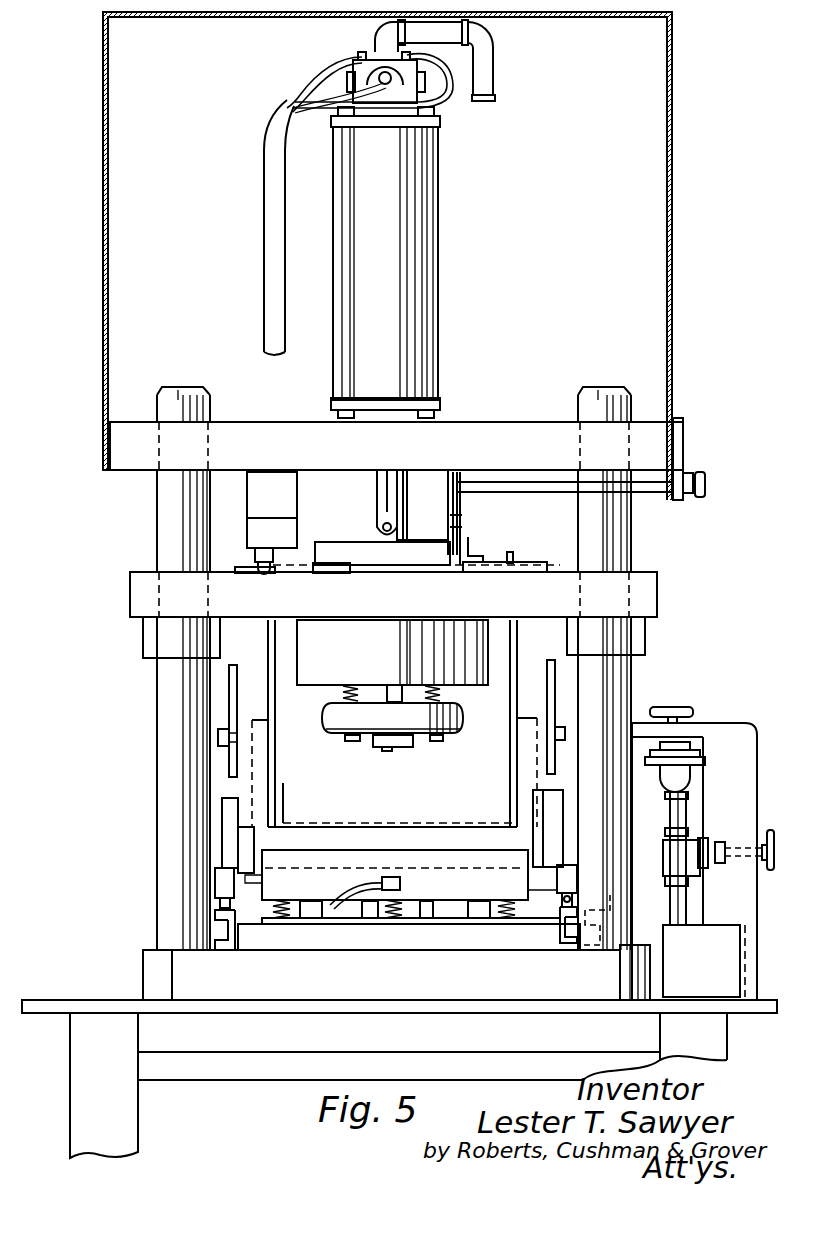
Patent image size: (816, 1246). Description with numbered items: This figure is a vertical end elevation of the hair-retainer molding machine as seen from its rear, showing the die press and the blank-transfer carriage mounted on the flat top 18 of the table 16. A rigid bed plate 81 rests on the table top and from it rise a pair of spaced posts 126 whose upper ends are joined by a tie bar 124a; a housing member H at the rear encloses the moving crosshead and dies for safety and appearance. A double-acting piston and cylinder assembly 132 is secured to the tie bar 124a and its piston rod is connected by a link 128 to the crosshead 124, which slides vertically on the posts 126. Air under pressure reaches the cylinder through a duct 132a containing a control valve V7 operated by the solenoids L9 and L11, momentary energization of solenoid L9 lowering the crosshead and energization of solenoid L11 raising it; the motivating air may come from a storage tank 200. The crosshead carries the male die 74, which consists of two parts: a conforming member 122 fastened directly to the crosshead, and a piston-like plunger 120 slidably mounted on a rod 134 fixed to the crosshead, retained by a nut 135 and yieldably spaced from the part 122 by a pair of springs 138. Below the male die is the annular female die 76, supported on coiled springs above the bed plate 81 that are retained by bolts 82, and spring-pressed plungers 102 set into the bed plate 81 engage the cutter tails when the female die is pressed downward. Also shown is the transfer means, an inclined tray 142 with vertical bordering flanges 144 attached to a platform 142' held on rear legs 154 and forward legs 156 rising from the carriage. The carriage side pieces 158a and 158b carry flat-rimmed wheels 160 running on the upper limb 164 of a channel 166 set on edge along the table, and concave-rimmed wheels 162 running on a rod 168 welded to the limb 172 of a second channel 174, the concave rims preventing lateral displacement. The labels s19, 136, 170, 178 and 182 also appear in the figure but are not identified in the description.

The housing member H is at (674, 184).
The tie bar 124a is at (407, 459).
The posts 126 is at (631, 664).
The crosshead 124 is at (648, 597).
The piston and cylinder assembly 132 is at (446, 262).
The duct 132a is at (274, 236).
The control valve V7 is at (398, 88).
The solenoid L9 is at (327, 70).
The solenoid L11 is at (437, 100).
The switch s19 is at (269, 523).
The rod 134 is at (377, 489).
The link 128 is at (372, 528).
The platform 142' is at (515, 543).
The bordering flanges 144 is at (275, 670).
The conforming member 122 is at (455, 632).
The plate 182 is at (218, 742).
The plate 178 is at (555, 704).
The roller 136 is at (327, 733).
The springs 138 is at (432, 712).
The plunger 120 is at (423, 713).
The nut 135 is at (413, 745).
The male die 74 is at (310, 700).
The inclined tray 142 is at (301, 796).
The forward legs 156 is at (230, 806).
The rear legs 154 is at (243, 839).
The female die 76 is at (388, 852).
The side piece 158a is at (220, 881).
The side piece 158b is at (565, 881).
The wheels 160 is at (220, 903).
The wheels 162 is at (540, 899).
The upper limb 164 is at (216, 920).
The channel 166 is at (232, 931).
The rod 168 is at (562, 904).
The bracket 170 is at (565, 911).
The limb 172 is at (565, 919).
The channel 174 is at (574, 940).
The bolts 82 is at (287, 906).
The spring-pressed plunger 102 is at (334, 912).
The bed plate 81 is at (396, 972).
The storage tank 200 is at (703, 853).
The table top 18 is at (90, 1000).
The table 16 is at (205, 1072).